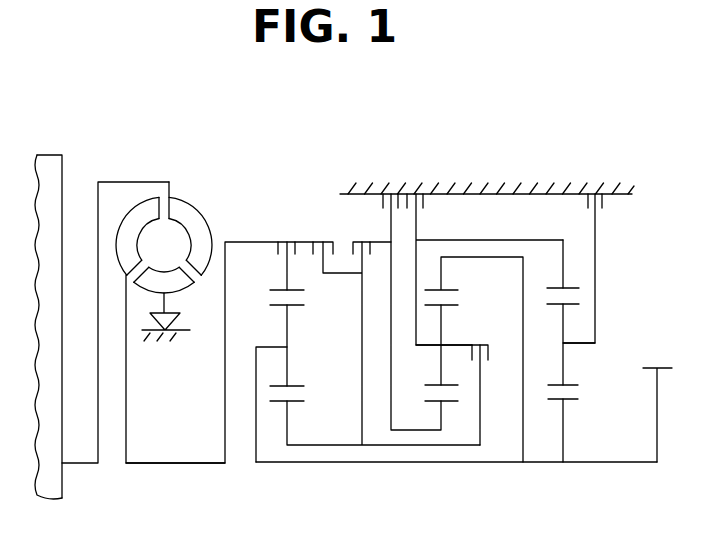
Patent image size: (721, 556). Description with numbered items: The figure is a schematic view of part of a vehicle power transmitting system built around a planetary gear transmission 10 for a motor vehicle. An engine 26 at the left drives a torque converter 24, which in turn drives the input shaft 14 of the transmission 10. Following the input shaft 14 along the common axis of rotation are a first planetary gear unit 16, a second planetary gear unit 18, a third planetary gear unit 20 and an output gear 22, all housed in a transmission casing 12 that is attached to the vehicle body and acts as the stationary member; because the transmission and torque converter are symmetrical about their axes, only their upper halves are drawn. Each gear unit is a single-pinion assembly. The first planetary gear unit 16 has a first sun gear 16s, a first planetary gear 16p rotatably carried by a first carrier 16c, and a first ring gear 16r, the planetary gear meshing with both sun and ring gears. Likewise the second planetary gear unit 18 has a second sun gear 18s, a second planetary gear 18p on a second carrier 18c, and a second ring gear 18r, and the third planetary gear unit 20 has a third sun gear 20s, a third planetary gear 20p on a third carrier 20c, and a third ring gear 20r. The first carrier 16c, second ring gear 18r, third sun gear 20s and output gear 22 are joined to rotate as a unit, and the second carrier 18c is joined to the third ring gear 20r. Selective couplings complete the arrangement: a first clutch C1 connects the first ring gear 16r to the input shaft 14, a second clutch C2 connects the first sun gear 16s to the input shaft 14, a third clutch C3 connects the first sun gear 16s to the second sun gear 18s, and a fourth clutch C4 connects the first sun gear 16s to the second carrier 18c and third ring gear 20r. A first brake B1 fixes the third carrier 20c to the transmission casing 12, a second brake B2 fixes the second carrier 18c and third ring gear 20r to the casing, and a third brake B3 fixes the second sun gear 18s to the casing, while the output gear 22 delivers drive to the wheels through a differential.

The planetary gear transmission 10 is at (509, 114).
The transmission casing 12 is at (601, 190).
The input shaft 14 is at (185, 465).
The first planetary gear unit 16 is at (281, 465).
The first ring gear 16r is at (278, 288).
The first planetary gear 16p is at (293, 308).
The first carrier 16c is at (289, 347).
The first sun gear 16s is at (293, 404).
The second planetary gear unit 18 is at (437, 465).
The second ring gear 18r is at (446, 288).
The second carrier 18c is at (434, 345).
The second planetary gear 18p is at (424, 386).
The second sun gear 18s is at (448, 403).
The third planetary gear unit 20 is at (563, 465).
The third ring gear 20r is at (571, 283).
The third carrier 20c is at (568, 343).
The third planetary gear 20p is at (568, 383).
The third sun gear 20s is at (568, 402).
The output gear 22 is at (663, 367).
The torque converter 24 is at (210, 185).
The engine 26 is at (48, 163).
The first brake B1 is at (582, 199).
The second brake B2 is at (432, 199).
The third brake B3 is at (382, 199).
The first clutch C1 is at (280, 248).
The second clutch C2 is at (316, 248).
The third clutch C3 is at (354, 247).
The fourth clutch C4 is at (491, 353).